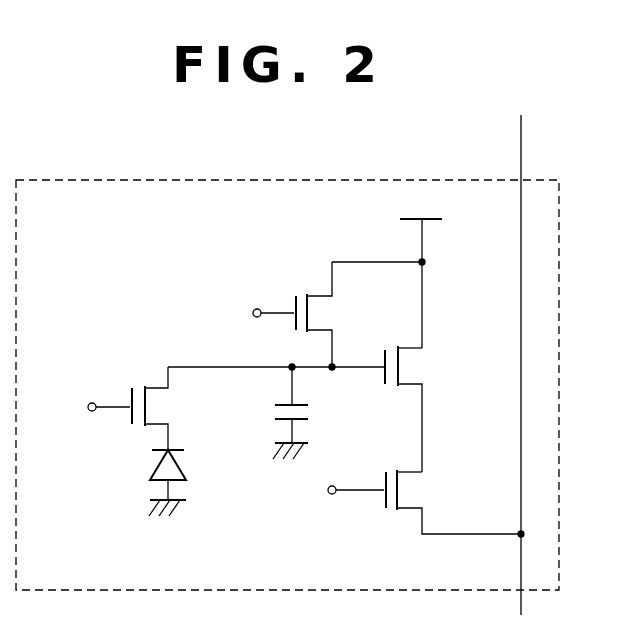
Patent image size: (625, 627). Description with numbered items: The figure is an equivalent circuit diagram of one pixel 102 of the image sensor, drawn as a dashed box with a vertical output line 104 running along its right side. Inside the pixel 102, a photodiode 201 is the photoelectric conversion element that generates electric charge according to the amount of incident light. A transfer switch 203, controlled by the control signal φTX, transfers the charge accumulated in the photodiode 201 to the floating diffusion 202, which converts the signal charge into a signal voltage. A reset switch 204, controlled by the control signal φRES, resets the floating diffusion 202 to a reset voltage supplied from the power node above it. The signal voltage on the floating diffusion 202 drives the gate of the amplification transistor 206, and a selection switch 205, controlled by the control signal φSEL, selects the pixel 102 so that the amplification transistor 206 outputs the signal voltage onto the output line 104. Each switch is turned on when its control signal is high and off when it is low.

The pixel 102 is at (40, 176).
The output line 104 is at (522, 143).
The photodiode 201 is at (158, 462).
The floating diffusion 202 is at (310, 412).
The transfer switch 203 is at (165, 407).
The reset switch 204 is at (332, 313).
The selection switch 205 is at (418, 490).
The amplification transistor 206 is at (420, 370).